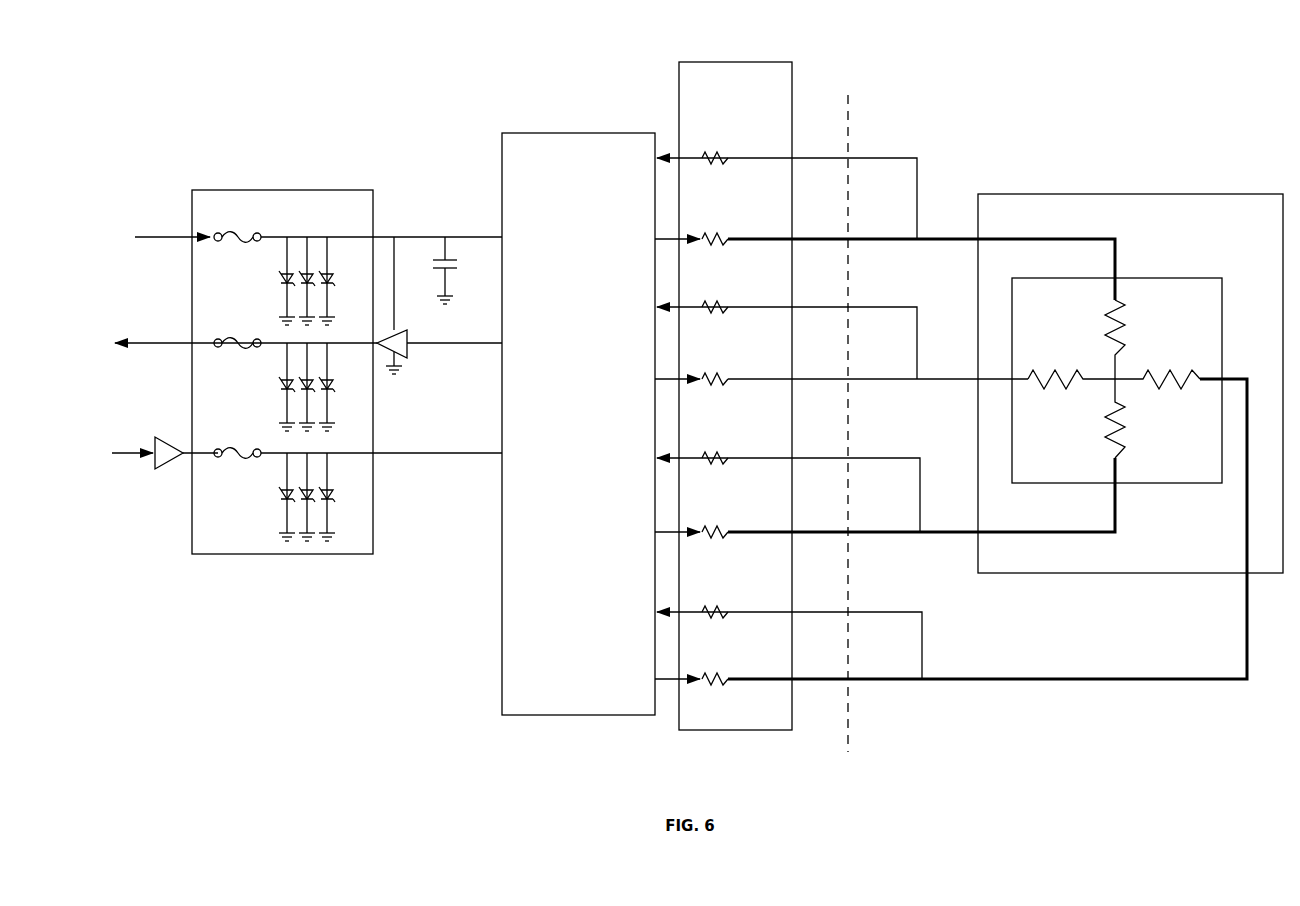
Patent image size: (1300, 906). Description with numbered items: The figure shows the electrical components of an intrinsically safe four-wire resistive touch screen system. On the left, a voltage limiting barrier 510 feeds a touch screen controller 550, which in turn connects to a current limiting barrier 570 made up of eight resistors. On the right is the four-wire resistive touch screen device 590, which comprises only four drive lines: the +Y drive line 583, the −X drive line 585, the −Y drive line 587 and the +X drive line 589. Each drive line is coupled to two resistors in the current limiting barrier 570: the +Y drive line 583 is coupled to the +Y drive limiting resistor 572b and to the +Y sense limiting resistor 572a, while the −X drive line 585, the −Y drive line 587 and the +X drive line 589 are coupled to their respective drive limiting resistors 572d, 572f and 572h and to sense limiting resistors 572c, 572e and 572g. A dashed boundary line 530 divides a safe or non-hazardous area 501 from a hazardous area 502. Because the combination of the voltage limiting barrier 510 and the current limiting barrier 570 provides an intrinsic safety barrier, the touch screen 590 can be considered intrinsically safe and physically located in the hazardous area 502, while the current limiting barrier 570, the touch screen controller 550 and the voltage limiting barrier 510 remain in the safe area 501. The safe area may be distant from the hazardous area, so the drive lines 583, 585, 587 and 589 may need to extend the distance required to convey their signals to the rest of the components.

The safe or non-hazardous area 501 is at (756, 746).
The hazardous area 502 is at (967, 742).
The voltage limiting barrier 510 is at (277, 186).
The boundary line 530 is at (853, 697).
The touch screen controller 550 is at (571, 128).
The current limiting barrier 570 is at (798, 82).
The +Y sense limiting resistor 572a is at (718, 152).
The +Y drive limiting resistor 572b is at (718, 233).
The −X sense limiting resistor 572c is at (718, 300).
The −X drive limiting resistor 572d is at (718, 372).
The −Y sense limiting resistor 572e is at (718, 452).
The −Y drive limiting resistor 572f is at (718, 526).
The +X sense limiting resistor 572g is at (718, 605).
The +X drive limiting resistor 572h is at (718, 673).
The +Y drive line 583 is at (956, 243).
The −X drive line 585 is at (956, 384).
The −Y drive line 587 is at (956, 537).
The +X drive line 589 is at (976, 676).
The 4-wire resistive touch screen device 590 is at (1138, 190).